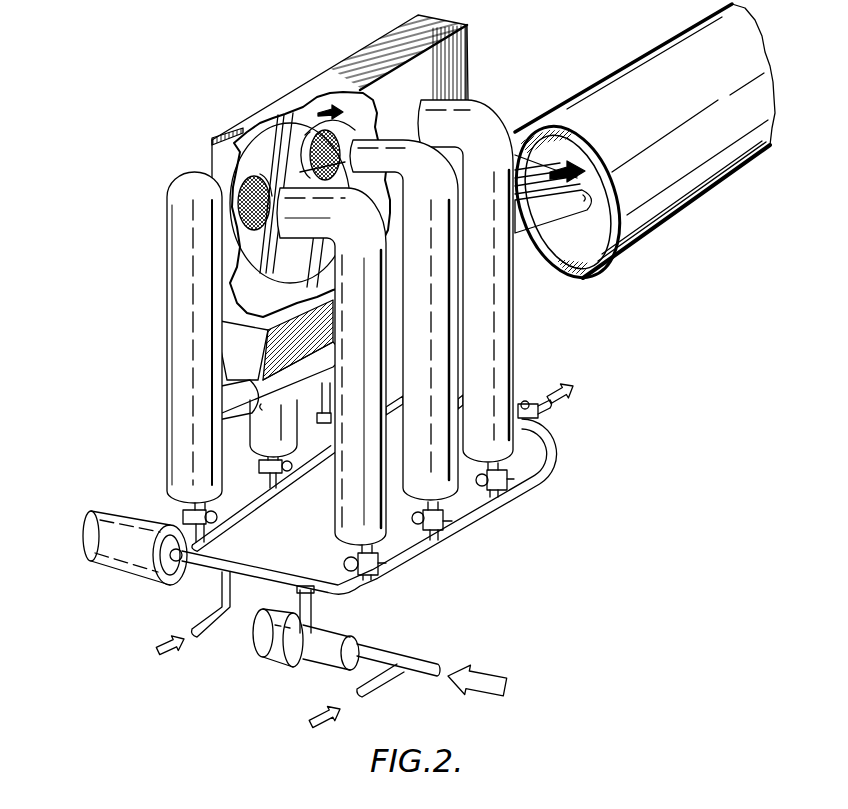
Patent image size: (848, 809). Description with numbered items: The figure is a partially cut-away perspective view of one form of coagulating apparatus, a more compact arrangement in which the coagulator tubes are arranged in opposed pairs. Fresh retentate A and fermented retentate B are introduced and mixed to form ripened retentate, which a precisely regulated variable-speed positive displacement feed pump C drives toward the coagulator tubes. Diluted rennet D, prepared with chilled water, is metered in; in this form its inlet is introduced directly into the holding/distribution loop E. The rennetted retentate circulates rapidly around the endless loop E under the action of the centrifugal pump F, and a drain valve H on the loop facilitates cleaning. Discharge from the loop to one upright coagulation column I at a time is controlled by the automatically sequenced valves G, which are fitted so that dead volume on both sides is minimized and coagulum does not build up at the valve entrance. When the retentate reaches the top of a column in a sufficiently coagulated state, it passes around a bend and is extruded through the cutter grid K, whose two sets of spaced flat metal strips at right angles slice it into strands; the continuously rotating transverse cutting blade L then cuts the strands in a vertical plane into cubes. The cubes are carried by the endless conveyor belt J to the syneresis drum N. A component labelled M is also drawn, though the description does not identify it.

The fresh retentate A is at (437, 673).
The fermented retentate B is at (350, 708).
The feed pump C is at (268, 652).
The diluted rennet D is at (188, 627).
The holding/distribution loop E is at (270, 575).
The centrifugal pump F is at (120, 568).
The valves G is at (441, 525).
The drain valve H is at (557, 394).
The coagulation columns I is at (182, 292).
The endless conveyor belt J is at (212, 400).
The cutter grid K is at (233, 207).
The transverse cutting blade L is at (273, 132).
The housing plate M is at (387, 44).
The syneresis unit N is at (658, 62).